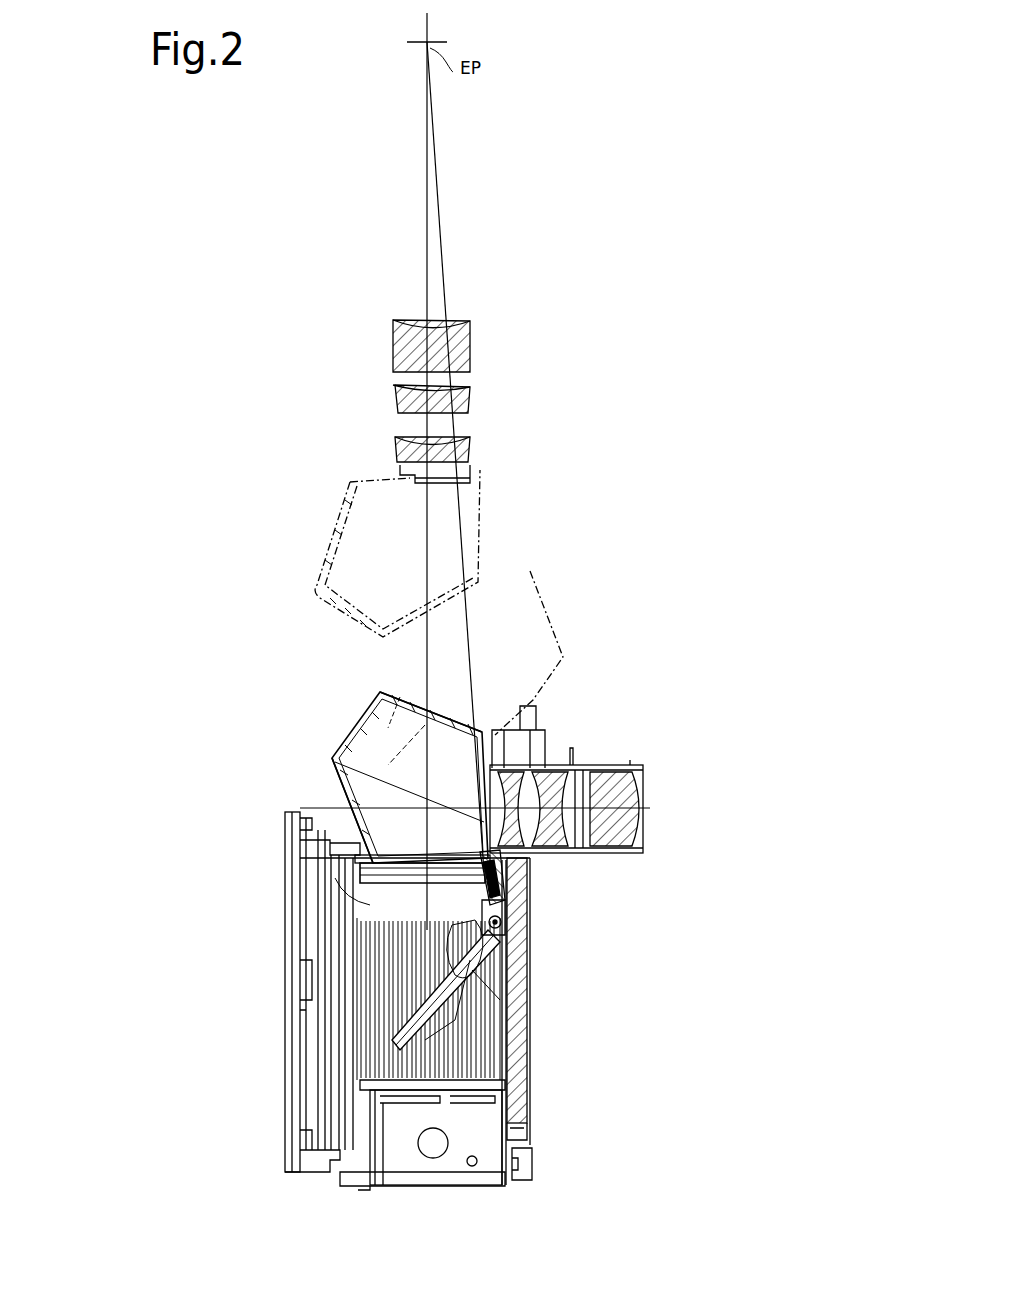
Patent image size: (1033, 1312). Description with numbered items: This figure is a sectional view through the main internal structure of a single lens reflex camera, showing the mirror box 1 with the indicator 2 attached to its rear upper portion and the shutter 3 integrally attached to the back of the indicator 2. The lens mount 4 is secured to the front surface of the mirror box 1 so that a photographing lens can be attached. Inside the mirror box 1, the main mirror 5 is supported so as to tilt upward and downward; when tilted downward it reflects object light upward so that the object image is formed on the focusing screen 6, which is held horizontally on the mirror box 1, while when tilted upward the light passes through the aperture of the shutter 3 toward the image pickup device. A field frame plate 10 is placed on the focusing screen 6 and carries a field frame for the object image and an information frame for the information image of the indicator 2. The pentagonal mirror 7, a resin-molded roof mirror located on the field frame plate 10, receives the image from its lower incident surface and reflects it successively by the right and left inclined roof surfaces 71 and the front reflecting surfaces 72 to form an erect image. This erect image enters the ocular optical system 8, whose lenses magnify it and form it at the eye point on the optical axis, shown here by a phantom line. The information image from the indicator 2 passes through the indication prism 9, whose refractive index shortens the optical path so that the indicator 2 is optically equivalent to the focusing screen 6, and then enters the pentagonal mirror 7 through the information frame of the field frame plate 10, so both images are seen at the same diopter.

The mirror box 1 is at (483, 1137).
The indicator 2 is at (515, 896).
The shutter 3 is at (515, 996).
The lens mount 4 is at (290, 1006).
The main mirror 5 is at (478, 1043).
The focusing screen 6 is at (335, 900).
The pentagonal mirror 7 is at (478, 582).
The inclined roof surfaces 71 is at (398, 700).
The front reflecting surfaces 72 is at (335, 782).
The ocular optical system 8 is at (470, 412).
The indication prism 9 is at (515, 868).
The field frame plate 10 is at (406, 855).